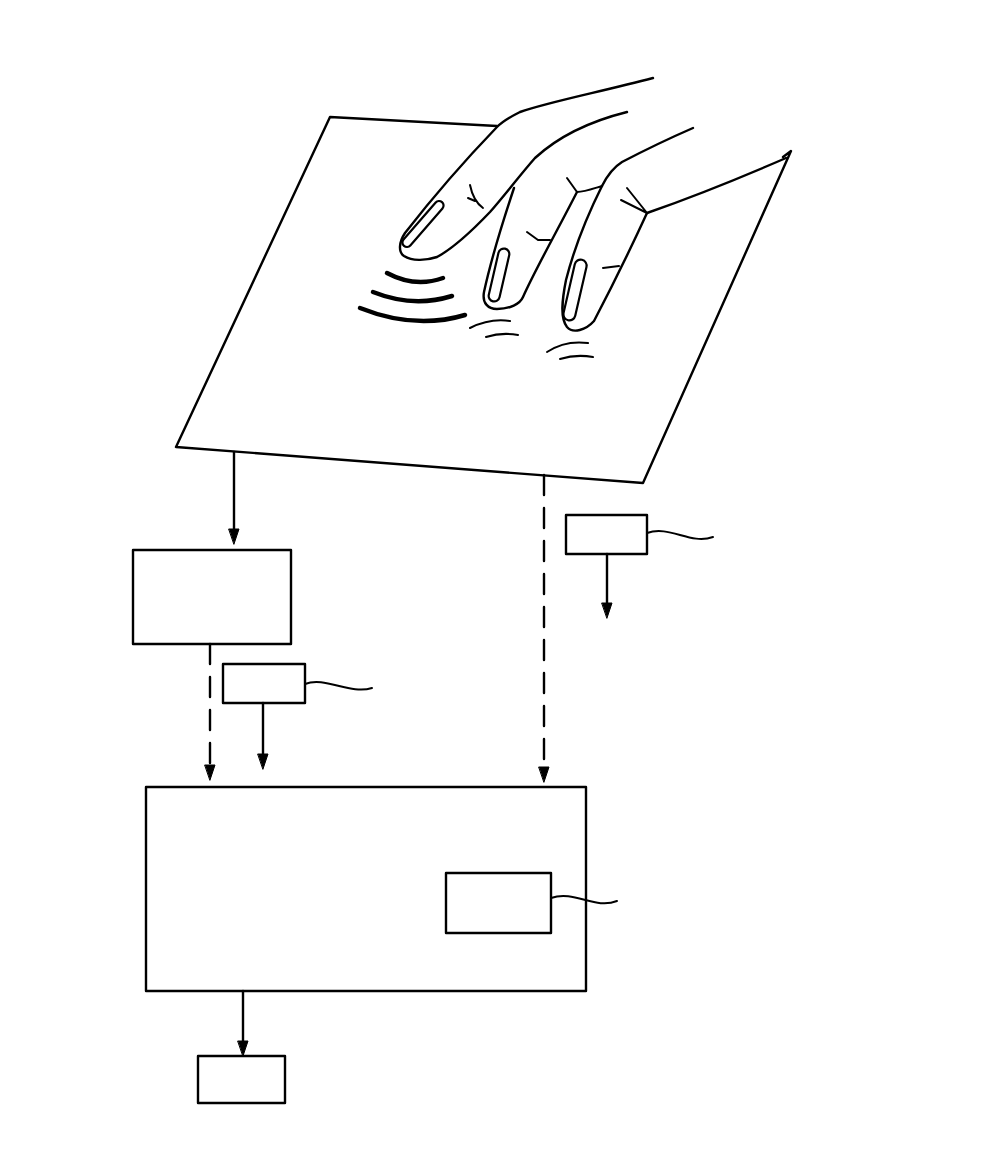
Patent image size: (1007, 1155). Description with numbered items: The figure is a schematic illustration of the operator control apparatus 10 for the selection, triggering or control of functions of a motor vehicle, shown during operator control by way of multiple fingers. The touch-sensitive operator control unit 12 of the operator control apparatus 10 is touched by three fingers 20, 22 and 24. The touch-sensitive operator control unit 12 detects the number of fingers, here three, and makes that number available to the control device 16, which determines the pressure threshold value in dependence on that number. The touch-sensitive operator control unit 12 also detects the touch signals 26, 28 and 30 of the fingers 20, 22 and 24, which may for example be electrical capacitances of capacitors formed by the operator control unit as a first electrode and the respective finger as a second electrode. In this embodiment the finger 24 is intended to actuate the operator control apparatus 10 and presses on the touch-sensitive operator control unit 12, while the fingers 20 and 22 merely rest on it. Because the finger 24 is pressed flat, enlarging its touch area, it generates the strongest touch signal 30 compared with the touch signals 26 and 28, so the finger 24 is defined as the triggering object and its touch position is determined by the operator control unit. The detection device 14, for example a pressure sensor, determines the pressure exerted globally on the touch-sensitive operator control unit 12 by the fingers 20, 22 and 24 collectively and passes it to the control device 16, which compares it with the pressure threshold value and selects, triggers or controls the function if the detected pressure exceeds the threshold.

The operator control apparatus 10 is at (300, 115).
The touch-sensitive operator control unit 12 is at (240, 332).
The detection device 14 is at (155, 602).
The control device 16 is at (146, 903).
The finger 20 is at (633, 248).
The finger 22 is at (585, 128).
The finger 24 is at (465, 155).
The touch signal 26 is at (563, 358).
The touch signal 28 is at (490, 338).
The touch signal 30 is at (402, 323).